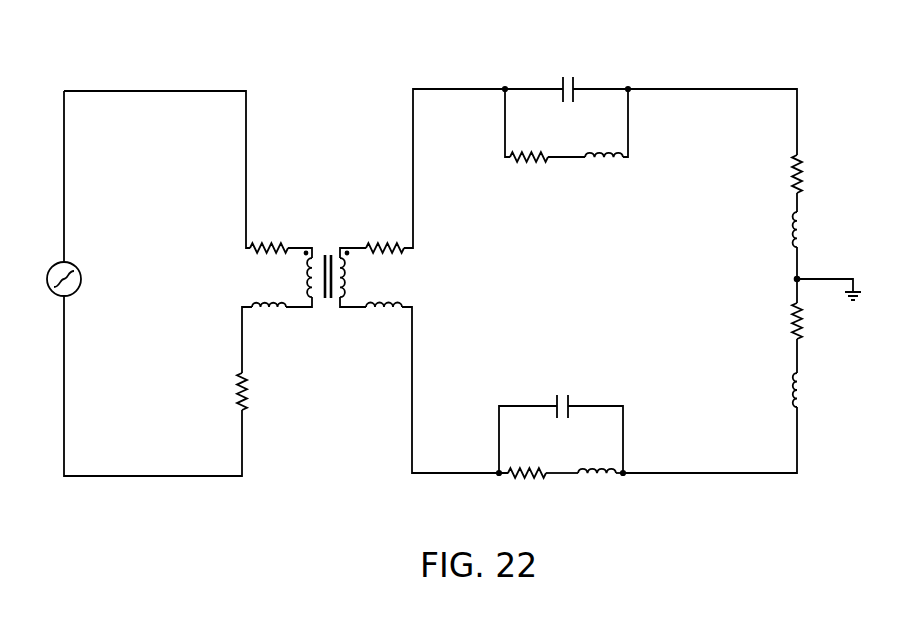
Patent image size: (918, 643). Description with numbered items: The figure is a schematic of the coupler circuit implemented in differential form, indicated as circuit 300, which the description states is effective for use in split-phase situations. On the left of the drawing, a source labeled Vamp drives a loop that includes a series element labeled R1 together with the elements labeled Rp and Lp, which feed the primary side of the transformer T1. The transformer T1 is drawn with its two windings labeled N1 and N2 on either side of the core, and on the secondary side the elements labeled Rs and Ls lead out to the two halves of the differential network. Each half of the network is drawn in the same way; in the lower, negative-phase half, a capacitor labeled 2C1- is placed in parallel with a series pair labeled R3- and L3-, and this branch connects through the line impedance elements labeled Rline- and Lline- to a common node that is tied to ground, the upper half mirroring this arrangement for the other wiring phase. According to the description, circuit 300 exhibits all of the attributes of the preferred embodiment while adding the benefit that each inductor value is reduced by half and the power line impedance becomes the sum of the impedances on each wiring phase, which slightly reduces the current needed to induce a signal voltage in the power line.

The circuit 300 is at (418, 52).
The amplifier voltage source Vamp is at (50, 271).
The resistor R1 is at (253, 391).
The primary resistance Rp is at (269, 240).
The primary inductance Lp is at (269, 315).
The transformer T1 is at (326, 265).
The primary winding N1 is at (302, 275).
The secondary winding N2 is at (350, 275).
The secondary resistance Rs is at (385, 240).
The secondary inductance Ls is at (384, 315).
The line resistance negative Rline- is at (788, 321).
The line inductance negative Lline- is at (786, 389).
The capacitor 2C1 negative 2C1- is at (561, 423).
The resistor ½R3 negative R3- is at (522, 484).
The inductor ½L3 negative L3- is at (595, 485).